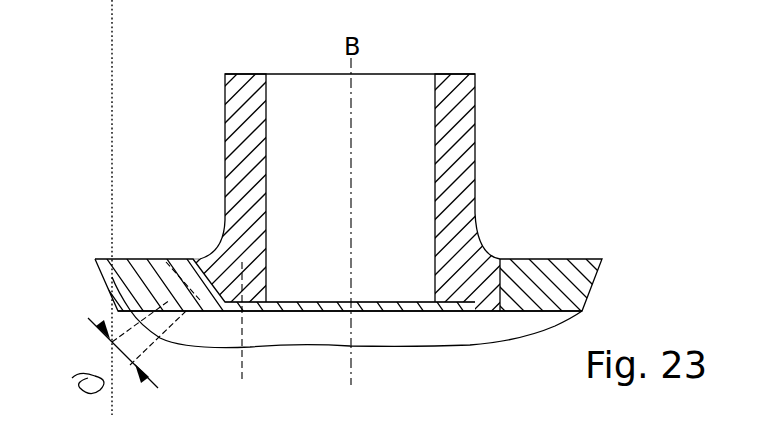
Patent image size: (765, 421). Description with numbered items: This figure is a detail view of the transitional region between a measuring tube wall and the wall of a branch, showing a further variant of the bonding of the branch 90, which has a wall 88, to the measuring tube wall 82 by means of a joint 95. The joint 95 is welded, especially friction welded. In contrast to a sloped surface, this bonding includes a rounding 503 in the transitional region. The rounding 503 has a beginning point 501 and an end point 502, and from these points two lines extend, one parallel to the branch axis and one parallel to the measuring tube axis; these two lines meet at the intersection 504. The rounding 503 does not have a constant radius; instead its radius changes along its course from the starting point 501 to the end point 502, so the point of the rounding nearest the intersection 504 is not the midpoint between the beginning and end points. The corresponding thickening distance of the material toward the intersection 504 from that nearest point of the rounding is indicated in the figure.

The wall 88 is at (247, 147).
The branch 90 is at (460, 130).
The measuring tube wall 82 is at (112, 282).
The joint 95 is at (457, 311).
The end point 502 is at (225, 220).
The rounding 503 is at (211, 252).
The beginning point 501 is at (197, 258).
The intersection 504 is at (246, 337).